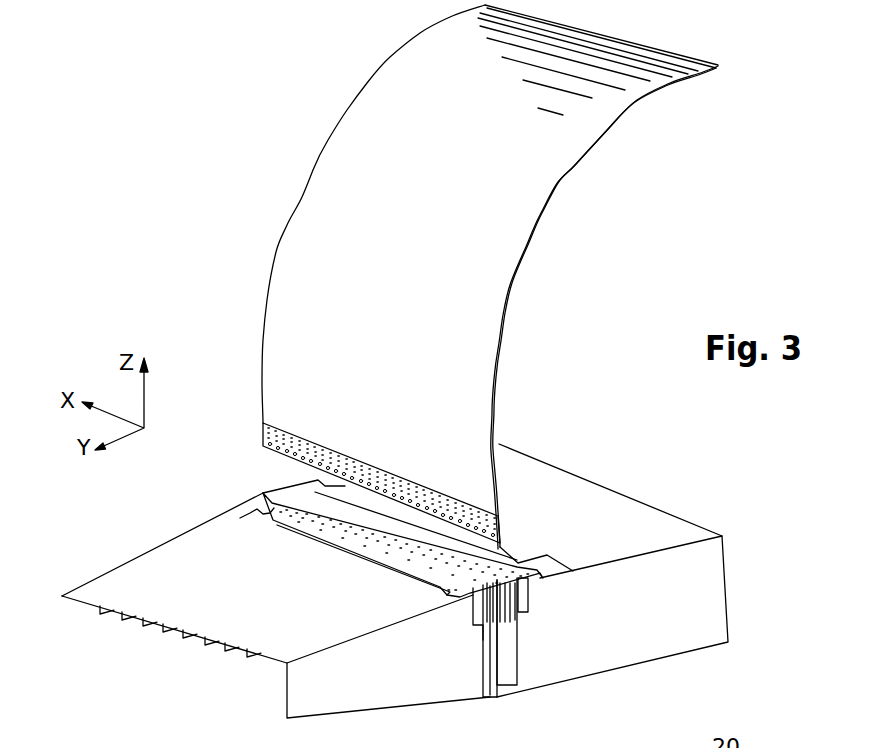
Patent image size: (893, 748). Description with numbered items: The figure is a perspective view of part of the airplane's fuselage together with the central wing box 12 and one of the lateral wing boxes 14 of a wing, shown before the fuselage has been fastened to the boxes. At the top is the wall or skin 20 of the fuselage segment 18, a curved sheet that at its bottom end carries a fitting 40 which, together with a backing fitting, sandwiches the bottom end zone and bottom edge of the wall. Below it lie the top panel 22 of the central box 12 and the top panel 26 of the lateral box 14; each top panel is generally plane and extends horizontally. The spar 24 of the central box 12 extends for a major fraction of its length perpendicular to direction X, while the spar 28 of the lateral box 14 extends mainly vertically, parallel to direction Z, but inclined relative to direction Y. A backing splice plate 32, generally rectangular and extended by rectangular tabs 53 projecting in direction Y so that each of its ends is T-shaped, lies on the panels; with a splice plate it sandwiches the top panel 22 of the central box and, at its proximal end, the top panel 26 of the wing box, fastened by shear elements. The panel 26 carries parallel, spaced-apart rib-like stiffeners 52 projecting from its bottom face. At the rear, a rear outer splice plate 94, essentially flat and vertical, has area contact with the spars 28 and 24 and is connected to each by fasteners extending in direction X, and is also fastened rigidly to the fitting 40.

The central wing box 12 is at (426, 589).
The lateral wing box 14 is at (278, 697).
The segment 18 is at (470, 277).
The skin 20 is at (513, 203).
The top panel of the central box 22 is at (592, 505).
The spar of the central box 24 is at (693, 595).
The top panel of the lateral box 26 is at (118, 583).
The spar of the lateral box 28 is at (340, 682).
The backing splice plate 32 is at (330, 535).
The fitting 40 is at (277, 425).
The stiffeners 52 is at (167, 632).
The tabs 53 is at (537, 578).
The rear outer splice plate 94 is at (508, 663).